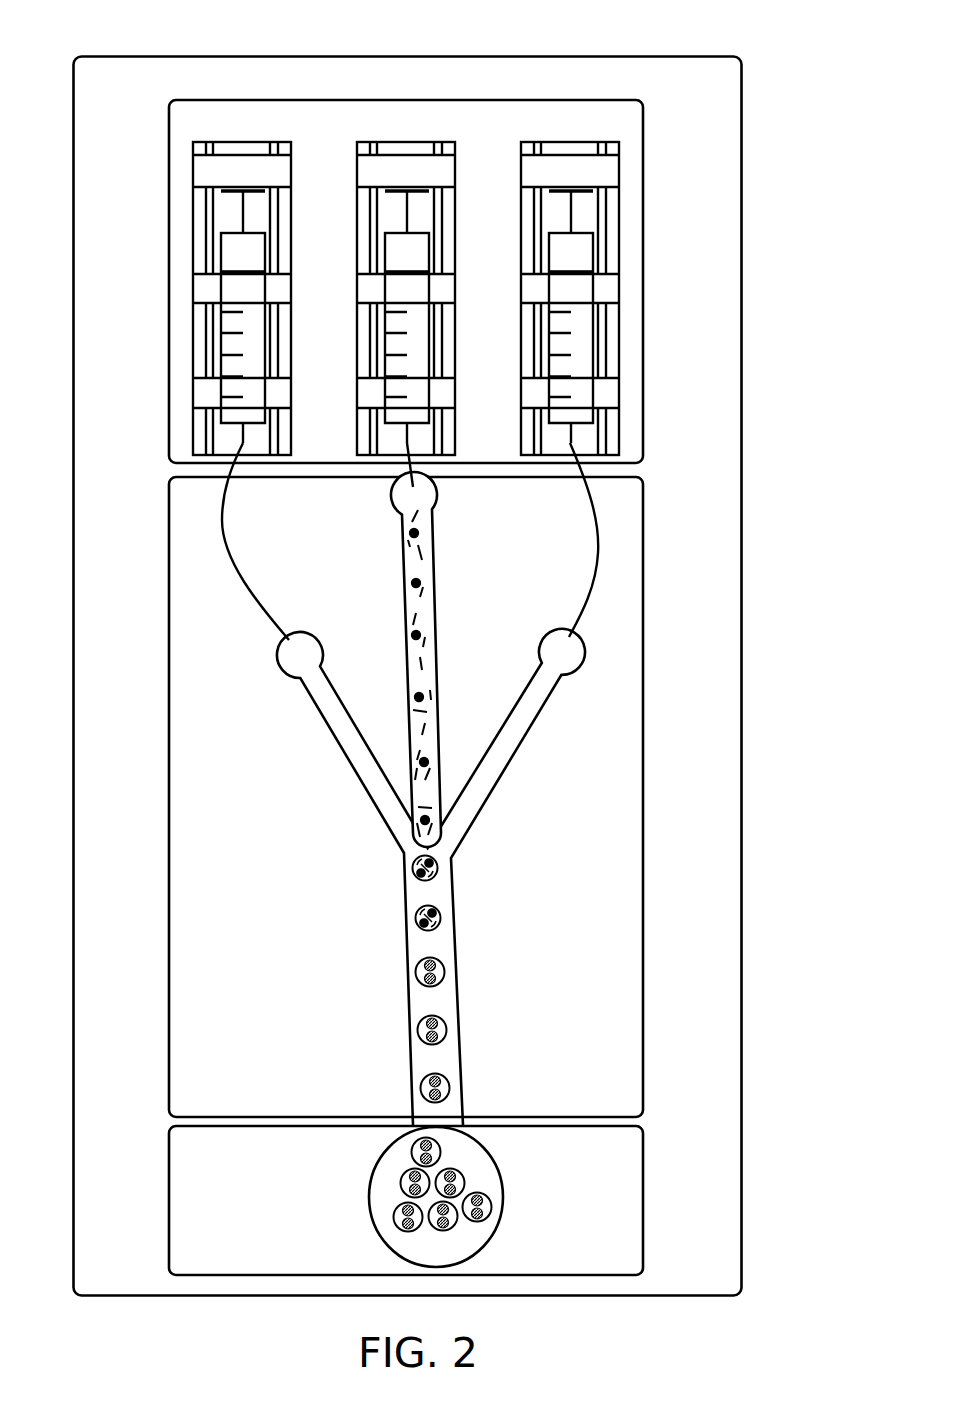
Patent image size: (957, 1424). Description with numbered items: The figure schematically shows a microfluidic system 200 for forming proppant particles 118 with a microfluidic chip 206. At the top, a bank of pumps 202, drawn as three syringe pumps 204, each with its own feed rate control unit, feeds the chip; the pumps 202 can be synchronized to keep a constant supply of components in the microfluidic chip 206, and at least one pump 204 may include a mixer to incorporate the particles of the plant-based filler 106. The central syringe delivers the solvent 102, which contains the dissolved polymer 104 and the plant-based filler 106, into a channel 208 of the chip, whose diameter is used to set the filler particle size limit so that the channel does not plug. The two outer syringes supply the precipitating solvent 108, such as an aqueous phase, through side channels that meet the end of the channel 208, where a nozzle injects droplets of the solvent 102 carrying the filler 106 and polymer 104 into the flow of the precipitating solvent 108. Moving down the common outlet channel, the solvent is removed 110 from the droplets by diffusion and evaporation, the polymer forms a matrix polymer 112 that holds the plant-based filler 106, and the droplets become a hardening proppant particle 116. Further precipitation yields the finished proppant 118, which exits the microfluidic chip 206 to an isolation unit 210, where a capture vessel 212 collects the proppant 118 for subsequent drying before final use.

The microfluidic system 200 is at (764, 68).
The pumps 202 is at (428, 130).
The syringe pumps 204 is at (291, 285).
The microfluidic chip 206 is at (245, 1073).
The channel 208 is at (437, 652).
The isolation unit 210 is at (242, 1183).
The capture vessel 212 is at (502, 1180).
The solvent 102 is at (408, 648).
The polymer 104 is at (409, 560).
The plant-based filler 106 is at (419, 536).
The precipitating solvent 108 is at (522, 723).
The removal 110 is at (437, 873).
The matrix polymer 112 is at (440, 925).
The hardening proppant particle 116 is at (442, 980).
The proppant 118 is at (447, 1078).